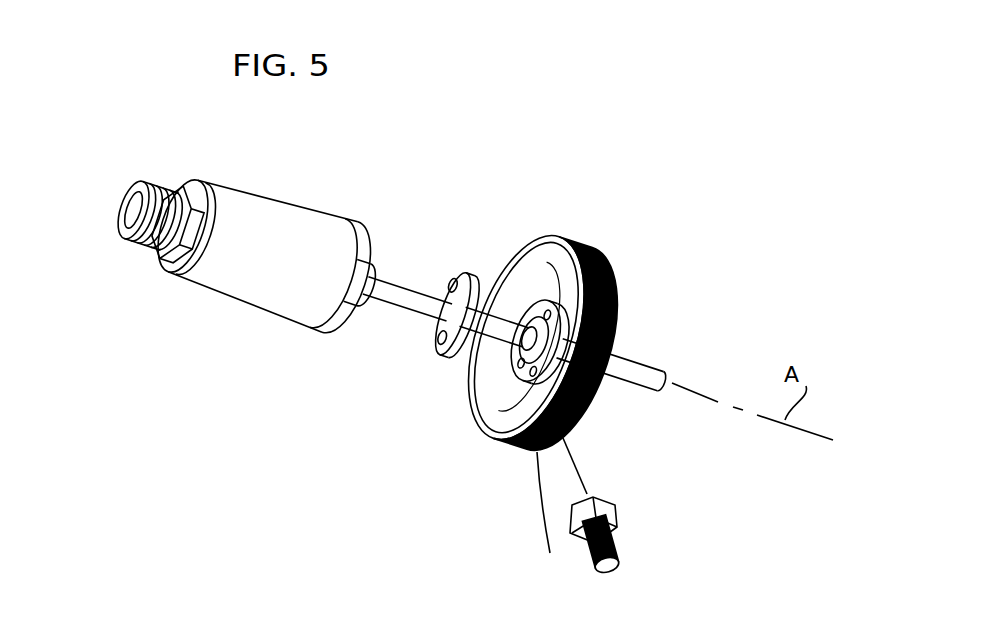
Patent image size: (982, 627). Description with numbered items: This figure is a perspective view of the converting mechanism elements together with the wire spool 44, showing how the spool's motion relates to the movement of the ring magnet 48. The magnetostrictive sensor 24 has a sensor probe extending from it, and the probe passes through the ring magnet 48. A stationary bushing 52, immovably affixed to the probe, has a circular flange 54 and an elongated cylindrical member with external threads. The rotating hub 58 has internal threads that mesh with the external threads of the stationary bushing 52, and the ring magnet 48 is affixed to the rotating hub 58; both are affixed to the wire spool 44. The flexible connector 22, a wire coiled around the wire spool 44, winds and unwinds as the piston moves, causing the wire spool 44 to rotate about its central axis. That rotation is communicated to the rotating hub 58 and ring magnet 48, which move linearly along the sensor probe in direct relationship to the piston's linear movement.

The magnetostrictive sensor 24 is at (293, 190).
The stationary bushing 52 is at (440, 347).
The circular flange 54 is at (469, 267).
The rotating hub 58 is at (566, 312).
The ring magnet 48 is at (532, 388).
The wire spool 44 is at (557, 513).
The flexible connector 22 is at (580, 478).